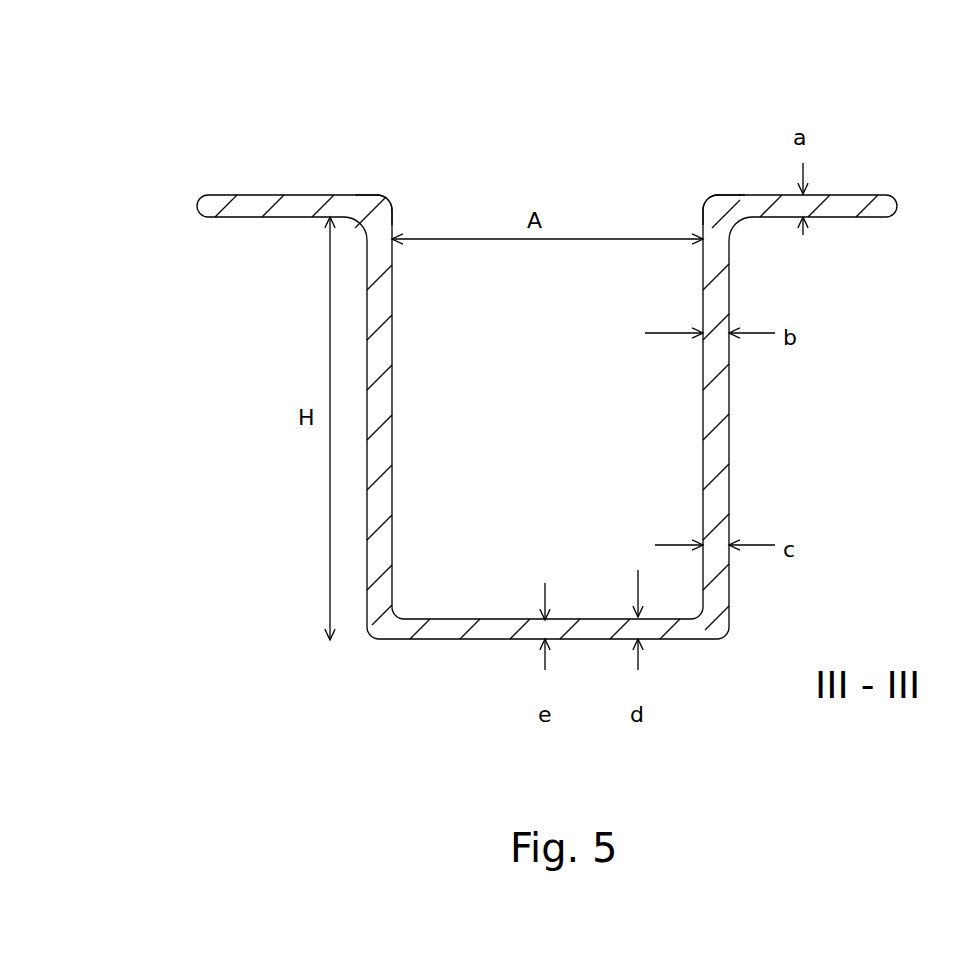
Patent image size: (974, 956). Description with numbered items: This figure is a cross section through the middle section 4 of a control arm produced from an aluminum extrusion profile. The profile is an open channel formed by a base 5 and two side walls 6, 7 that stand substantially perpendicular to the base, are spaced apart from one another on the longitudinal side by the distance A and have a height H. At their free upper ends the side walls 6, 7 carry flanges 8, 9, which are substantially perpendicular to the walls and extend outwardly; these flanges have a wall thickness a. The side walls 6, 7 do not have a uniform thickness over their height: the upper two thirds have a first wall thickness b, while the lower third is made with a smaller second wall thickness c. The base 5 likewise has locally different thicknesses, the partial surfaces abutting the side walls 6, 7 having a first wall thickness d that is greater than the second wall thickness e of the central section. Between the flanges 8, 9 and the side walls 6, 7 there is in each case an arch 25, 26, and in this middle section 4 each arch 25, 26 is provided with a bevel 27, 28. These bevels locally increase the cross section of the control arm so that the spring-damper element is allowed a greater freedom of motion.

The middle section 4 is at (292, 717).
The base 5 is at (460, 622).
The side wall 6 is at (386, 487).
The side wall 7 is at (729, 447).
The flange 8 is at (228, 208).
The flange 9 is at (855, 207).
The arch 25 is at (390, 207).
The arch 26 is at (703, 210).
The bevel 27 is at (372, 200).
The bevel 28 is at (718, 196).